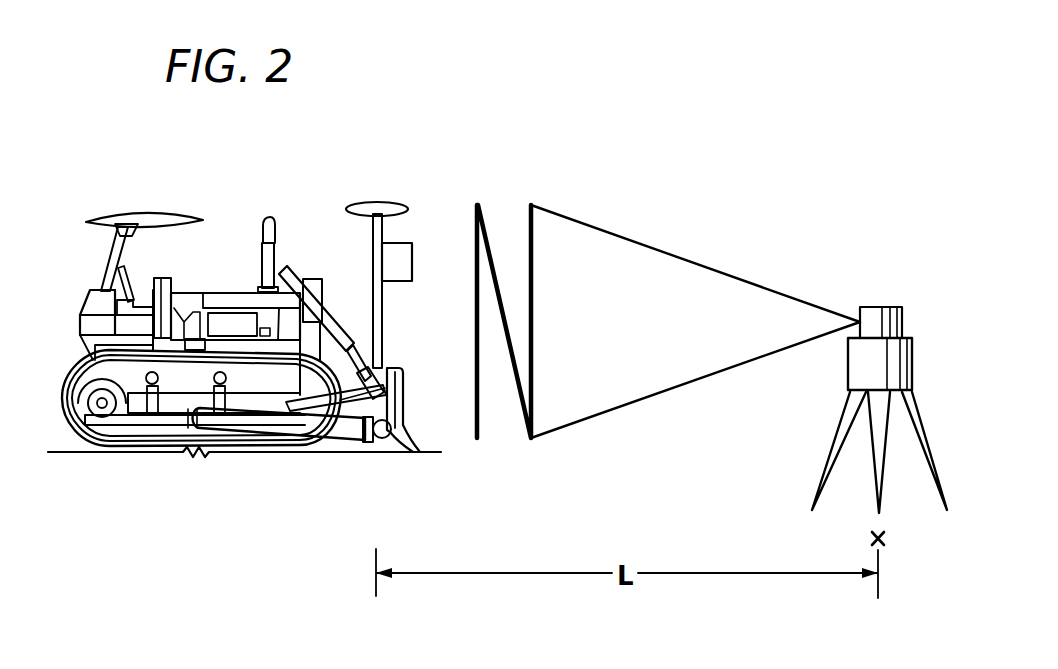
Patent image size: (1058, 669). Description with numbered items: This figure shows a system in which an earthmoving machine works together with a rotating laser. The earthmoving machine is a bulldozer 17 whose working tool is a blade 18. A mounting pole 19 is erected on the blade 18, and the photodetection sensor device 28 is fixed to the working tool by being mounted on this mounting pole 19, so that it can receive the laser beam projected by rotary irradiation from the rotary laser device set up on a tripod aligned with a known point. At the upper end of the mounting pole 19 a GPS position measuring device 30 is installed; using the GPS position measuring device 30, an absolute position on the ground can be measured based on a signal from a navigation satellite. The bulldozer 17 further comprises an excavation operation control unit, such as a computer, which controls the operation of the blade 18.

The bulldozer 17 is at (235, 218).
The blade 18 is at (407, 419).
The mounting pole 19 is at (371, 262).
The photodetection sensor device 28 is at (418, 243).
The GPS position measuring device 30 is at (380, 202).